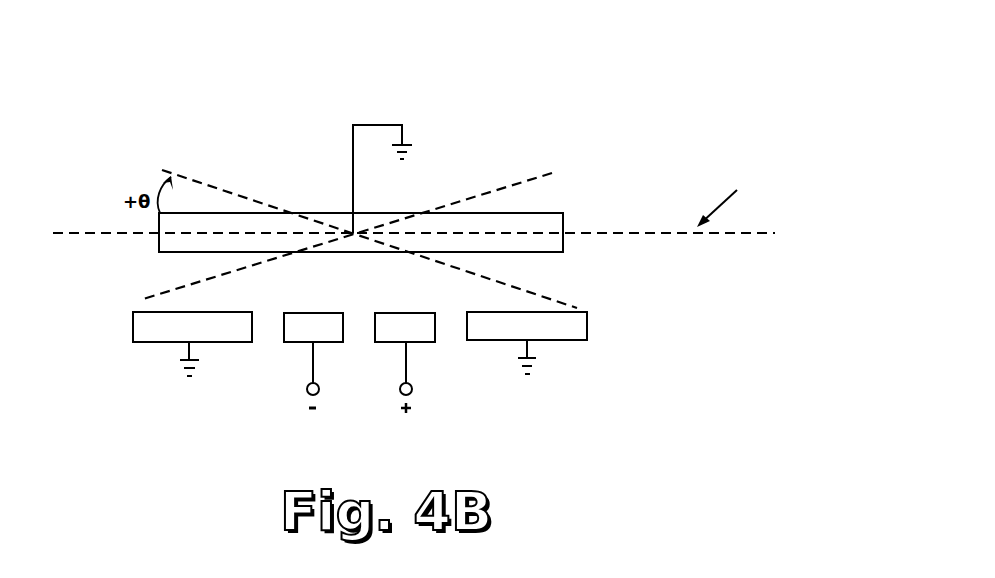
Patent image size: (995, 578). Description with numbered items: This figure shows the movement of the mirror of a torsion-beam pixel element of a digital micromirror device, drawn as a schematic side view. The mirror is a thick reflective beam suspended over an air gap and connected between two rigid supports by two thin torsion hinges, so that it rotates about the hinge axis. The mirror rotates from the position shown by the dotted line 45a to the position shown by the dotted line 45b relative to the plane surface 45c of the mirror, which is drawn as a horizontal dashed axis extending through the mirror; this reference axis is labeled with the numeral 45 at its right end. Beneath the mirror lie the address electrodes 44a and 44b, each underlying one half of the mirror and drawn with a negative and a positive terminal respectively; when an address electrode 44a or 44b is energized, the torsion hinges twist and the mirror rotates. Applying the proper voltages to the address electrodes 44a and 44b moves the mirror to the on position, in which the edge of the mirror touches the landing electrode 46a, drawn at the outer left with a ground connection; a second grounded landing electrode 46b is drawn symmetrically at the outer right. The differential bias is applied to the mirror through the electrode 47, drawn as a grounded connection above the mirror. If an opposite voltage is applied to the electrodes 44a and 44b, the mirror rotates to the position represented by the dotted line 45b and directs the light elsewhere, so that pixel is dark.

The address electrode 44a is at (307, 387).
The address electrode 44b is at (412, 387).
The reference axis 45 is at (428, 234).
The dotted line 45a is at (210, 187).
The dotted line 45b is at (532, 178).
The plane surface 45c is at (731, 199).
The landing electrode 46a is at (133, 332).
The grounded electrode 46b is at (587, 328).
The electrode 47 is at (370, 125).